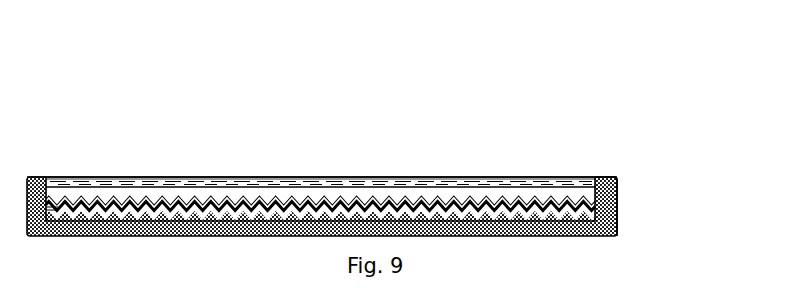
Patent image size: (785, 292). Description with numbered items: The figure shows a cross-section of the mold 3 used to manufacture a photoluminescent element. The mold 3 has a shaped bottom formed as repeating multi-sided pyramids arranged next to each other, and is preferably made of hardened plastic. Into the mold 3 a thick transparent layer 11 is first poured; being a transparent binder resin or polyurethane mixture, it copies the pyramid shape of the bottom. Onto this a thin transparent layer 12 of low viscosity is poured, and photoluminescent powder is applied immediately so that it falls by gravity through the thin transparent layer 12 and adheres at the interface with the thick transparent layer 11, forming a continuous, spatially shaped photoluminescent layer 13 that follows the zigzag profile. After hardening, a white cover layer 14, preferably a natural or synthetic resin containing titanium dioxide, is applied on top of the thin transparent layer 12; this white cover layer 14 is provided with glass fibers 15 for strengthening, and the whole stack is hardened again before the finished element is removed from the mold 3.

The mold 3 is at (607, 198).
The thick transparent layer 11 is at (615, 174).
The thin transparent layer 12 is at (568, 190).
The photoluminescent layer 13 is at (568, 210).
The white cover layer 14 is at (540, 179).
The glass fibers 15 is at (527, 178).